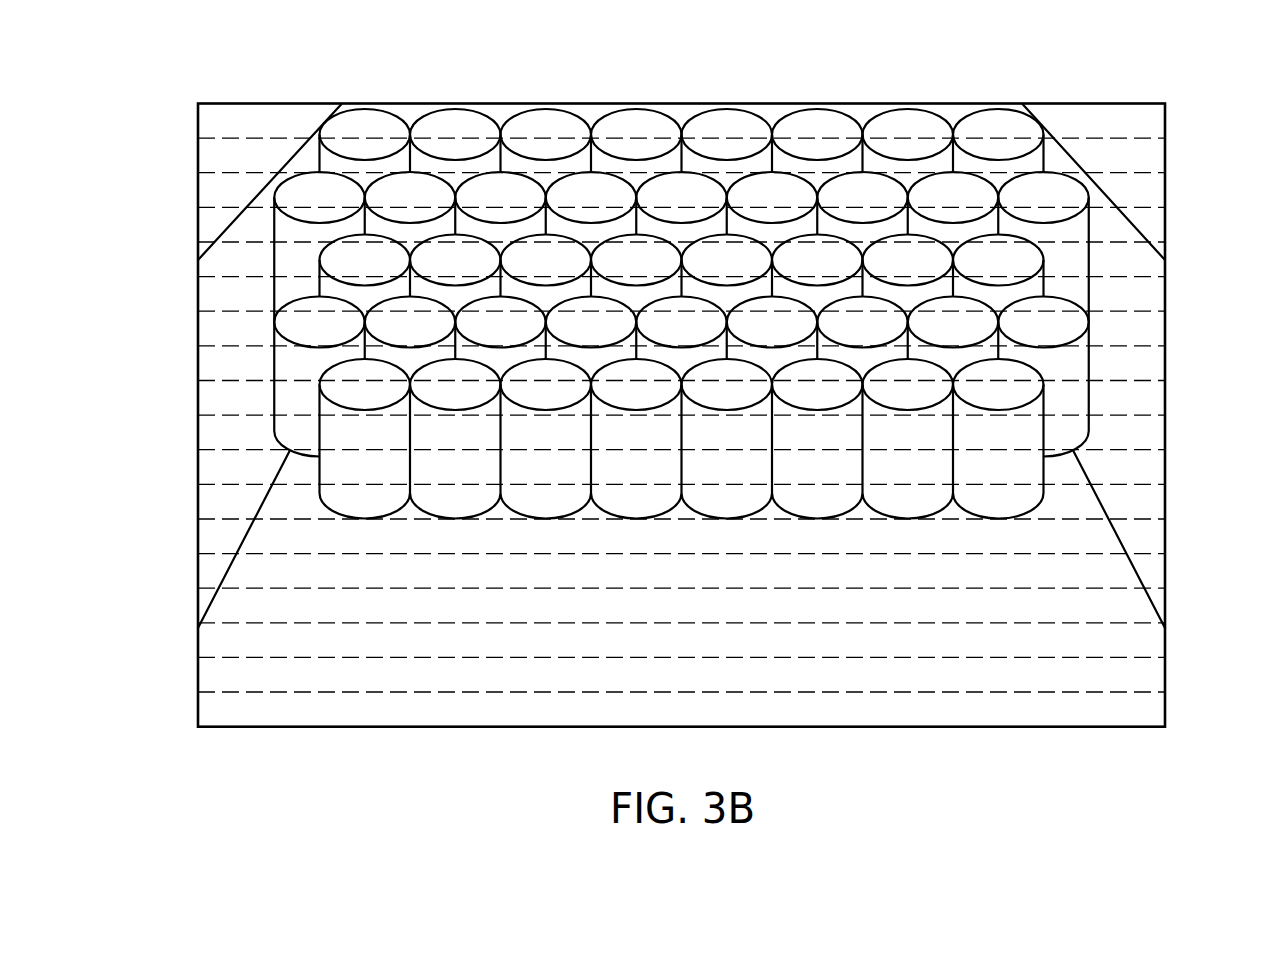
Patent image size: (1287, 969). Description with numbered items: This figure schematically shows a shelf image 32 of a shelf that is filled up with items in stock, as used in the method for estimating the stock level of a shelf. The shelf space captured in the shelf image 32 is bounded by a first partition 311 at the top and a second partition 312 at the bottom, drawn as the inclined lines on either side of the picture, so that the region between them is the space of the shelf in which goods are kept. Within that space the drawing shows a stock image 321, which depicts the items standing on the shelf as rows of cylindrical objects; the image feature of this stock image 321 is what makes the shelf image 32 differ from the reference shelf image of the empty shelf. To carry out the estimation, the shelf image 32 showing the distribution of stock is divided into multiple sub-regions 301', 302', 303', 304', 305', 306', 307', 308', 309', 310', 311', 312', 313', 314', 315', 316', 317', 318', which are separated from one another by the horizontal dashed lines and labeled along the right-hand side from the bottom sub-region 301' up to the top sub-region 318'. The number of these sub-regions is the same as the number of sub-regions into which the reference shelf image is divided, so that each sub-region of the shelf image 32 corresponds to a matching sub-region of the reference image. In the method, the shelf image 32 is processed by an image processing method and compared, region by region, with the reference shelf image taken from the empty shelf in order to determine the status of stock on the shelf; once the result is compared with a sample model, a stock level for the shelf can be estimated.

The shelf image 32 is at (390, 102).
The first partition 311 is at (643, 182).
The second partition 312 is at (643, 539).
The stock image 321 is at (360, 370).
The sub-region 301' is at (726, 416).
The sub-region 302' is at (723, 679).
The sub-region 303' is at (726, 644).
The sub-region 304' is at (723, 610).
The sub-region 305' is at (726, 575).
The sub-region 306' is at (723, 540).
The sub-region 307' is at (726, 506).
The sub-region 308' is at (723, 471).
The sub-region 309' is at (726, 436).
The sub-region 310' is at (723, 402).
The sub-region 311' is at (726, 367).
The sub-region 312' is at (723, 333).
The sub-region 313' is at (726, 298).
The sub-region 314' is at (723, 263).
The sub-region 315' is at (726, 229).
The sub-region 316' is at (723, 194).
The sub-region 317' is at (726, 159).
The sub-region 318' is at (723, 125).